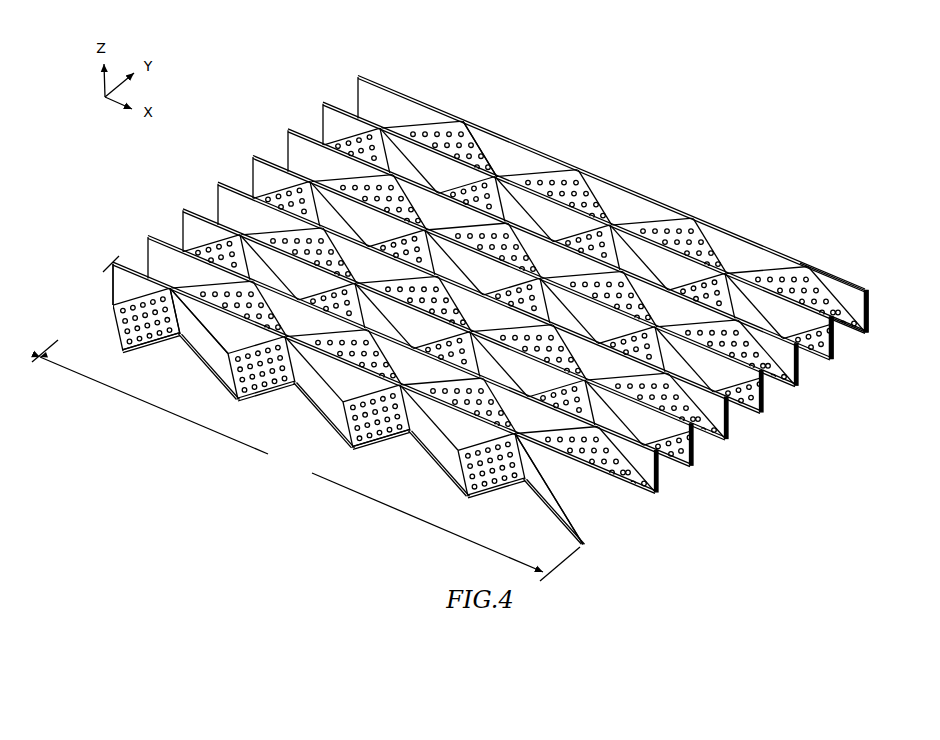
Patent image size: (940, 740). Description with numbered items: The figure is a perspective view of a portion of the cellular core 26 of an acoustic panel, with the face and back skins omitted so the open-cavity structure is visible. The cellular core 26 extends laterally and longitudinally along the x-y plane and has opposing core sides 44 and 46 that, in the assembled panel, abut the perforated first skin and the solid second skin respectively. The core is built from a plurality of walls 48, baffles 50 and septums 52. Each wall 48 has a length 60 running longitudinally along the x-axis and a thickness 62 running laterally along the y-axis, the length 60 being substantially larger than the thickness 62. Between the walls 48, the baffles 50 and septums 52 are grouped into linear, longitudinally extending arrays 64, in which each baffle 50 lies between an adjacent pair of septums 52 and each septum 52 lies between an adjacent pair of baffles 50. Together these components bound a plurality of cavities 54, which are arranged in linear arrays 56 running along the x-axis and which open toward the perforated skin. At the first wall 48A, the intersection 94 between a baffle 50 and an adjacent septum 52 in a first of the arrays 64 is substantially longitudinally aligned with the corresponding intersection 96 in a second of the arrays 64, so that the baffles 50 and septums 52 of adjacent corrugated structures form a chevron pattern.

The cellular core 26 is at (744, 128).
The core side 44 is at (845, 288).
The core side 46 is at (866, 338).
The walls 48 is at (873, 312).
The first wall 48A is at (110, 298).
The baffles 50 is at (652, 222).
The septums 52 is at (612, 222).
The cavities 54 is at (397, 112).
The linear arrays 56 is at (339, 91).
The length 60 is at (306, 460).
The thickness 62 is at (106, 264).
The arrays 64 is at (497, 298).
The intersection 94 is at (181, 336).
The intersection 96 is at (217, 295).